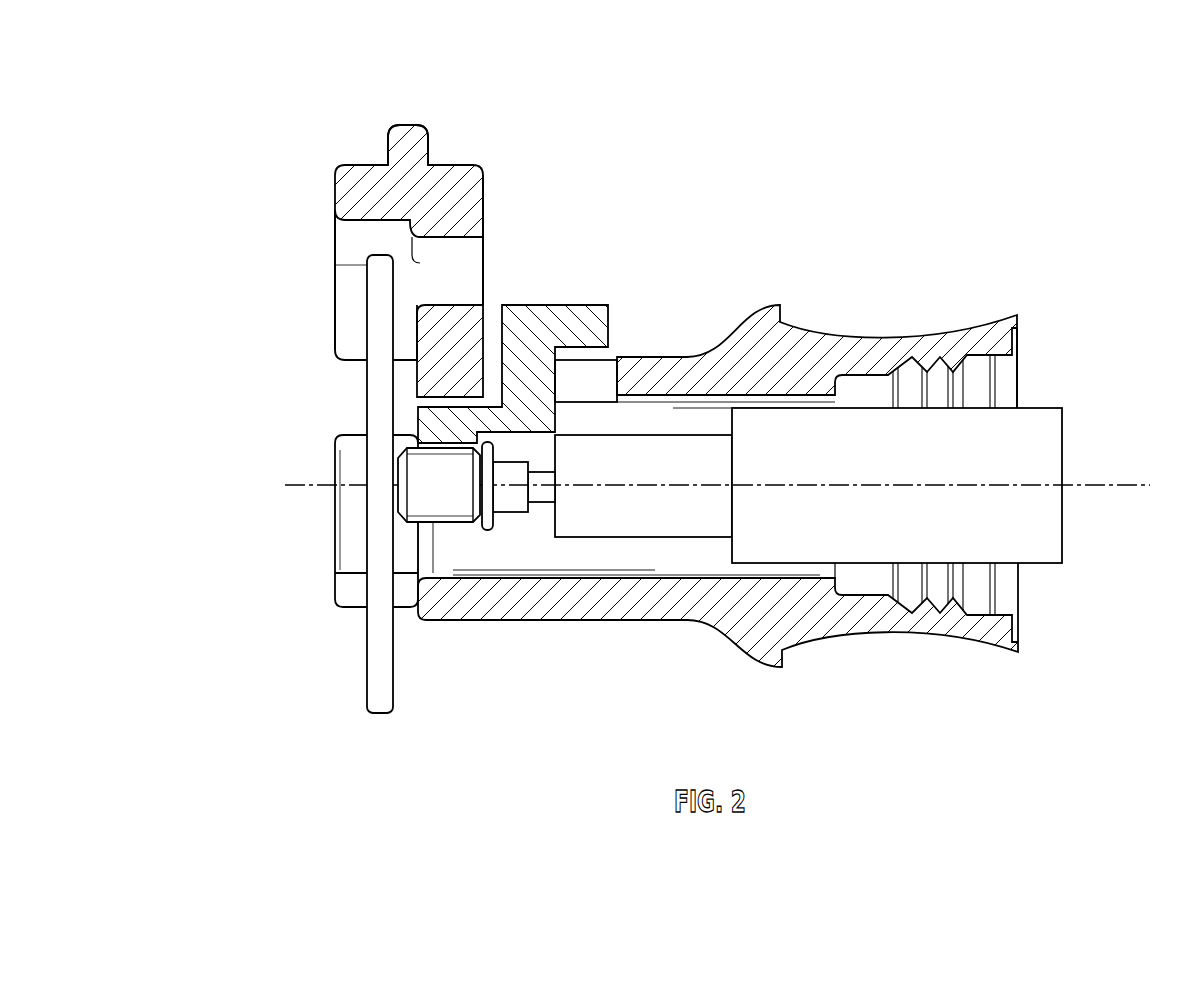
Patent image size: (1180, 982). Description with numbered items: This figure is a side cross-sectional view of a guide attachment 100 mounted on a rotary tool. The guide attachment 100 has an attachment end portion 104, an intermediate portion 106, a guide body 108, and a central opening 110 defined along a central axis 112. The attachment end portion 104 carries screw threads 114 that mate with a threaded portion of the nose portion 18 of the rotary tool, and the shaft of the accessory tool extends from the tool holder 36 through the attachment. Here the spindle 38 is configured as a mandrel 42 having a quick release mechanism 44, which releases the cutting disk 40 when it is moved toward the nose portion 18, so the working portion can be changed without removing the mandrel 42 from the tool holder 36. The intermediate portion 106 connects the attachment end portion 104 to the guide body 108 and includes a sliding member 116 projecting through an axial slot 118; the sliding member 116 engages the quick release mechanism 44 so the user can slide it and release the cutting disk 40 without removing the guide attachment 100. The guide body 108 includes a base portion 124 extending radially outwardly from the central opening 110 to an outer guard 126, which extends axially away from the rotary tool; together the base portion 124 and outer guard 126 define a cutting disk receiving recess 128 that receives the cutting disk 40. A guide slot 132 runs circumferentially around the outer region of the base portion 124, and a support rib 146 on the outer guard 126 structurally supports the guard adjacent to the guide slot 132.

The guide attachment 100 is at (262, 102).
The guide body 108 is at (533, 135).
The outer guard 126 is at (340, 200).
The support rib 146 is at (415, 128).
The guide slot 132 is at (490, 245).
The cutting disk receiving recess 128 is at (348, 308).
The base portion 124 is at (466, 332).
The sliding member 116 is at (575, 322).
The axial slot 118 is at (598, 352).
The intermediate portion 106 is at (680, 313).
The mandrel 42 is at (475, 560).
The spindle 38 is at (517, 550).
The screw threads 114 is at (937, 582).
The tool holder 36 is at (690, 543).
The nose portion 18 is at (1047, 433).
The attachment end portion 104 is at (1053, 300).
The central opening 110 is at (1042, 393).
The central axis 112 is at (1125, 487).
The cutting disk 40 is at (380, 703).
The quick release mechanism 44 is at (456, 508).